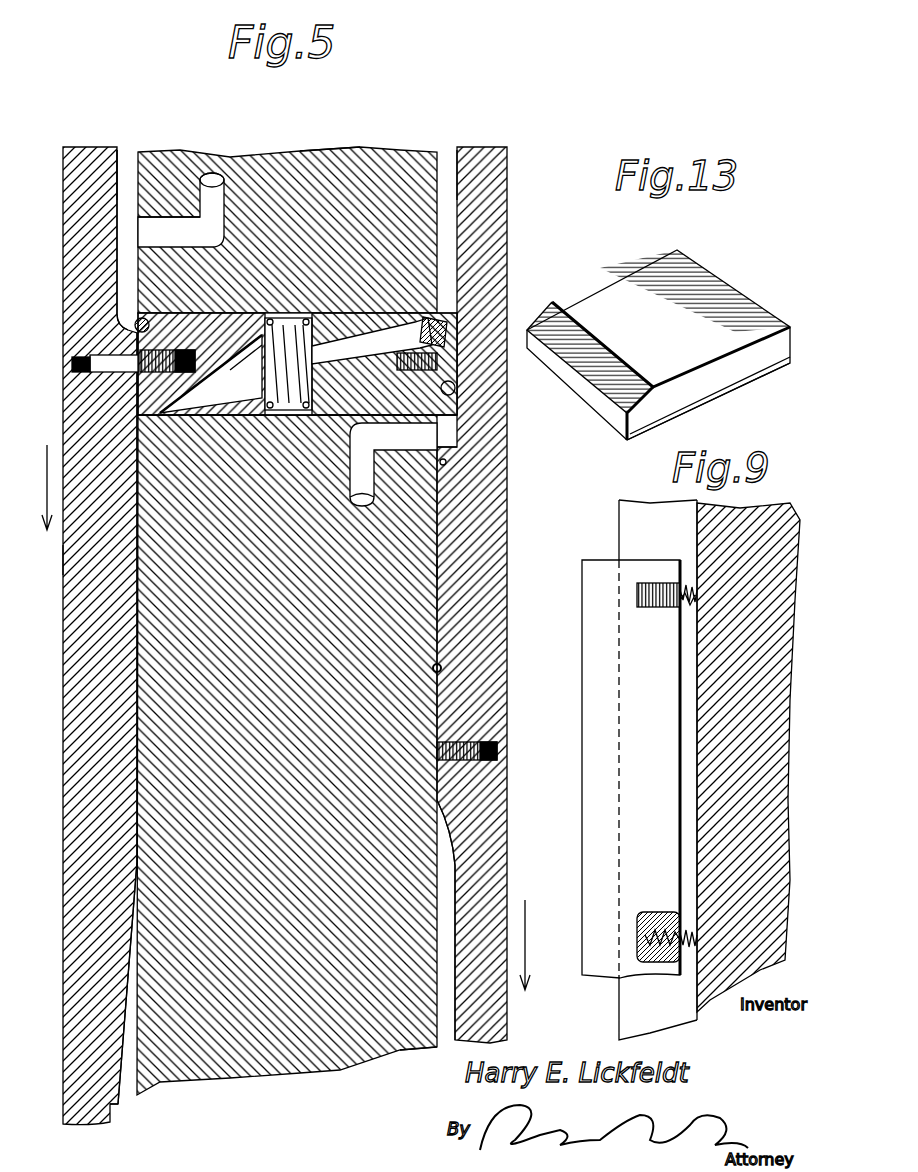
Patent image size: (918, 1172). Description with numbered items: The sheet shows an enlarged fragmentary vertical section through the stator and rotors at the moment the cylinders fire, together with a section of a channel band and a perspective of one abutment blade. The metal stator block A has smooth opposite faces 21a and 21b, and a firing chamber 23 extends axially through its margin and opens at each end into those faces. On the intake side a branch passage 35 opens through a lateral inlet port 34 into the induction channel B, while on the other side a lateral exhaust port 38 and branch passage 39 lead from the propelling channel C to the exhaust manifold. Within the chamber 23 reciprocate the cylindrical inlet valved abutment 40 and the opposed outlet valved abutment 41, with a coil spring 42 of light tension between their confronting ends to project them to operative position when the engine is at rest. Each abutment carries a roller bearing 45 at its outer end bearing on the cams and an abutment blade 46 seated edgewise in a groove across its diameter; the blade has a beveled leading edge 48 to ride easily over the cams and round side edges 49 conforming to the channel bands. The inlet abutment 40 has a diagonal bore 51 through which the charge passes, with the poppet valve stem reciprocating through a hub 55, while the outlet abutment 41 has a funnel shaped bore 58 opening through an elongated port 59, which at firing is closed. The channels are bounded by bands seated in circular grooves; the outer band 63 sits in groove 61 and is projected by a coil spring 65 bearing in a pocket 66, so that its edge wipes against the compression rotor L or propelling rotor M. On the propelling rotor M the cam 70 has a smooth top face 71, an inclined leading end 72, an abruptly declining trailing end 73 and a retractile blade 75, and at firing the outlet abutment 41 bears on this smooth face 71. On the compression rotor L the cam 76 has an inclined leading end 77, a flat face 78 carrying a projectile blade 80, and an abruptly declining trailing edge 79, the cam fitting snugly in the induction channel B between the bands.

In FIG. 5, the smooth face of stator block 21a is at (437, 1047).
In FIG. 5, the propelling face of stator block 21b is at (120, 1108).
In FIG. 5, the firing chamber 23 is at (246, 357).
In FIG. 5, the lateral inlet port 34 is at (440, 463).
In FIG. 5, the branch passage 35 is at (393, 464).
In FIG. 5, the lateral exhaust port 38 is at (160, 217).
In FIG. 5, the exhaust branch passage 39 is at (181, 210).
In FIG. 5, the inlet valved abutment 40 is at (433, 405).
In FIG. 5, the outlet valved abutment 41 is at (180, 396).
In FIG. 5, the coil spring 42 is at (301, 364).
In FIG. 5, the roller bearing 45 is at (455, 390).
In FIG. 5, the abutment blade 46 is at (140, 362).
In FIG. 13, the abutment blade 46 is at (600, 292).
In FIG. 13, the beveled leading edge 48 is at (546, 320).
In FIG. 13, the round side edge 49 is at (722, 395).
In FIG. 5, the diagonal bore 51 is at (372, 341).
In FIG. 9, the hub 55 is at (662, 937).
In FIG. 5, the funnel shaped bore 58 is at (211, 374).
In FIG. 5, the elongated port 59 is at (140, 418).
In FIG. 9, the circular groove 61 is at (640, 516).
In FIG. 9, the outer band 63 is at (590, 614).
In FIG. 9, the coil spring 65 is at (688, 588).
In FIG. 9, the pocket 66 is at (652, 963).
In FIG. 5, the cam 70 is at (128, 558).
In FIG. 5, the smooth top face 71 is at (138, 658).
In FIG. 5, the inclined leading end 72 is at (128, 983).
In FIG. 5, the trailing end 73 is at (122, 316).
In FIG. 5, the retractile blade 75 is at (105, 352).
In FIG. 5, the cam 76 is at (440, 571).
In FIG. 5, the inclined leading end 77 is at (447, 855).
In FIG. 5, the flat face 78 is at (440, 668).
In FIG. 5, the trailing edge 79 is at (458, 432).
In FIG. 5, the projectile blade 80 is at (475, 758).
In FIG. 5, the stator block A is at (315, 155).
In FIG. 9, the stator block A is at (782, 885).
In FIG. 5, the induction channel B is at (447, 155).
In FIG. 5, the propelling channel C is at (124, 155).
In FIG. 5, the compression rotor L is at (490, 527).
In FIG. 5, the propelling rotor M is at (78, 796).